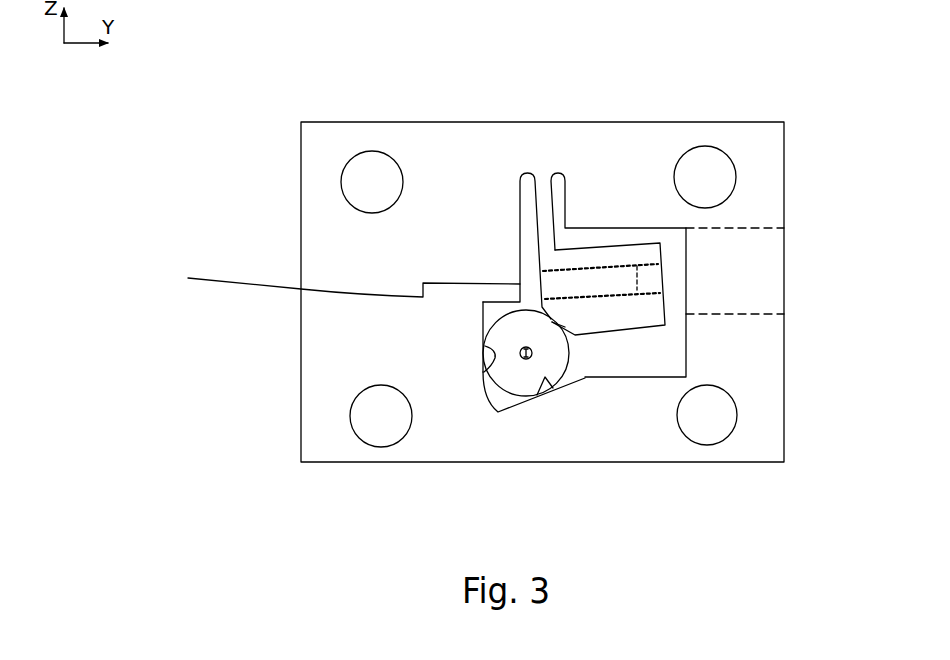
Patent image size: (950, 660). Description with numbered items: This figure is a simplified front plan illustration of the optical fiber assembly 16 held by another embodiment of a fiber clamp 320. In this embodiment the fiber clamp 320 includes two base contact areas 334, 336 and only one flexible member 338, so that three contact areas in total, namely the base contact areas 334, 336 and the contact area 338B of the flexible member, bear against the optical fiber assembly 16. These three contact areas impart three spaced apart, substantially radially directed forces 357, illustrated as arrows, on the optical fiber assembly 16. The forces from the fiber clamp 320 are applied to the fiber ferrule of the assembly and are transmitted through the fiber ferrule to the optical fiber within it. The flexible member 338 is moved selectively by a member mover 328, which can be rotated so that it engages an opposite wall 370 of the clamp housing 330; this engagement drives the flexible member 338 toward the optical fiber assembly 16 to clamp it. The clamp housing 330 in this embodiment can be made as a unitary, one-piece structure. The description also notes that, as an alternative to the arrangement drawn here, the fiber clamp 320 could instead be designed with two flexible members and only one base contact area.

The fiber clamp 320 is at (723, 101).
The clamp housing 330 is at (304, 120).
The member mover 328 is at (600, 280).
The opposite wall 370 is at (329, 275).
The radially directed forces 357 is at (477, 352).
The flexible member 338 is at (659, 323).
The contact area of the flexible member 338B is at (559, 324).
The base contact area 334 is at (556, 390).
The base contact area 336 is at (486, 365).
The optical fiber assembly 16 is at (531, 392).